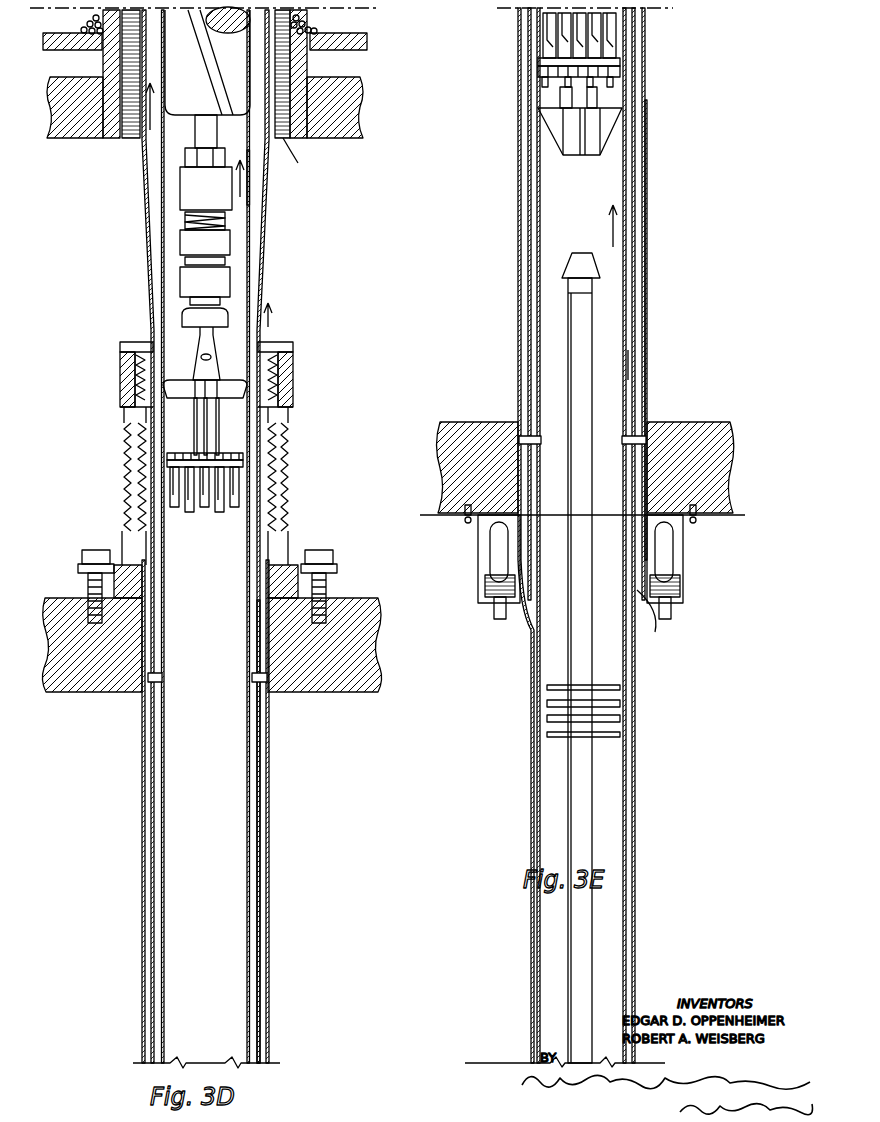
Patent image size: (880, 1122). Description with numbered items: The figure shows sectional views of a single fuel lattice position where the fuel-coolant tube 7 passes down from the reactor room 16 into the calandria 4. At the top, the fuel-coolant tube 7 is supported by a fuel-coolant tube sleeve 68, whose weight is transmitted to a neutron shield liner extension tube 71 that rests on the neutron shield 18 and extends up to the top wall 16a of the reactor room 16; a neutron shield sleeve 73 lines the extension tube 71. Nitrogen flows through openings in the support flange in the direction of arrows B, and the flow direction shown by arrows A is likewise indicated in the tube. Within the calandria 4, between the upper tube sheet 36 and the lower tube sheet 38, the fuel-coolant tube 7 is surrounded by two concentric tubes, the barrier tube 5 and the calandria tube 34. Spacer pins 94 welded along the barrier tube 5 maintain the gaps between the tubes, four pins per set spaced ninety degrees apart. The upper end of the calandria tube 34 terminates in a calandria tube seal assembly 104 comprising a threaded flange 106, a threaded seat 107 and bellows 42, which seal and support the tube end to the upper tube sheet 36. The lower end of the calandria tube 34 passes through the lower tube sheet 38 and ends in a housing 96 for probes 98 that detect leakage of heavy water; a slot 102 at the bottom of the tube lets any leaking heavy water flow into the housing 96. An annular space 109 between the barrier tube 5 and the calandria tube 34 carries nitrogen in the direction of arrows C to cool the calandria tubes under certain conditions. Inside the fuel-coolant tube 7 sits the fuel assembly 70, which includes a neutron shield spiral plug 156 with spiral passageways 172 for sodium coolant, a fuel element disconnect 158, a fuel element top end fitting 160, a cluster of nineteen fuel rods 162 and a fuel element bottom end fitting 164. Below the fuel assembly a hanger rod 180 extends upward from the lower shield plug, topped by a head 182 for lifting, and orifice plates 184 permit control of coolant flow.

In FIG. 3D, the calandria 4 is at (70, 884).
In FIG. 3E, the calandria 4 is at (472, 219).
In FIG. 3D, the barrier tube 5 is at (262, 220).
In FIG. 3E, the barrier tube 5 is at (647, 83).
In FIG. 3D, the fuel-coolant tube 7 is at (253, 247).
In FIG. 3E, the fuel-coolant tube 7 is at (625, 135).
In FIG. 3D, the reactor room 16 is at (76, 265).
In FIG. 3E, the reactor room 16 is at (458, 746).
In FIG. 3D, the top wall of reactor room 16a is at (365, 100).
In FIG. 3D, the neutron shield 18 is at (353, 22).
In FIG. 3D, the calandria tube 34 is at (270, 830).
In FIG. 3E, the calandria tube 34 is at (645, 183).
In FIG. 3D, the upper tube sheet 36 is at (365, 683).
In FIG. 3E, the lower tube sheet 38 is at (705, 422).
In FIG. 3D, the bellows 42 is at (283, 457).
In FIG. 3D, the fuel-coolant tube sleeve 68 is at (152, 43).
In FIG. 3D, the fuel assembly 70 is at (233, 448).
In FIG. 3E, the fuel assembly 70 is at (617, 42).
In FIG. 3D, the neutron shield liner extension tube 71 is at (307, 62).
In FIG. 3D, the neutron shield sleeve 73 is at (300, 156).
In FIG. 3D, the spacer pins 94 is at (255, 690).
In FIG. 3E, the spacer pins 94 is at (527, 427).
In FIG. 3E, the probe housing 96 is at (683, 570).
In FIG. 3E, the probes 98 is at (668, 557).
In FIG. 3E, the slot 102 is at (640, 545).
In FIG. 3D, the calandria tube seal assembly 104 is at (293, 362).
In FIG. 3D, the threaded flange 106 is at (290, 383).
In FIG. 3D, the threaded seat 107 is at (267, 342).
In FIG. 3D, the annular space 109 is at (265, 513).
In FIG. 3E, the annular space 109 is at (633, 257).
In FIG. 3D, the neutron shield spiral plug 156 is at (271, 177).
In FIG. 3D, the fuel element disconnect 158 is at (230, 202).
In FIG. 3D, the fuel element top end fitting 160 is at (178, 378).
In FIG. 3D, the fuel rods 162 is at (250, 475).
In FIG. 3E, the fuel rods 162 is at (620, 28).
In FIG. 3E, the fuel element bottom end fitting 164 is at (612, 137).
In FIG. 3D, the spiral passageways 172 is at (198, 78).
In FIG. 3E, the hanger rod 180 is at (593, 655).
In FIG. 3E, the rod head 182 is at (580, 258).
In FIG. 3E, the orifice plates 184 is at (617, 735).
In FIG. 3D, the flow direction A is at (242, 182).
In FIG. 3E, the flow direction A is at (615, 230).
In FIG. 3D, the arrows B is at (142, 140).
In FIG. 3E, the arrows B is at (625, 368).
In FIG. 3D, the arrows C is at (273, 304).
In FIG. 3E, the arrows C is at (648, 621).